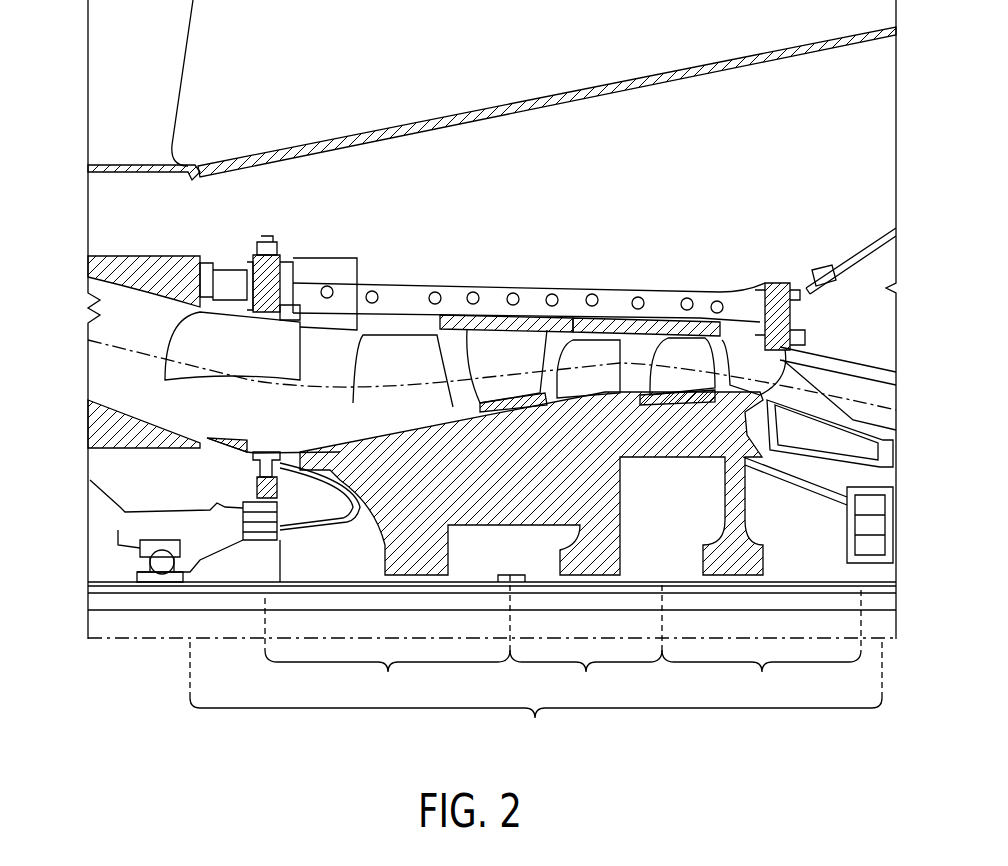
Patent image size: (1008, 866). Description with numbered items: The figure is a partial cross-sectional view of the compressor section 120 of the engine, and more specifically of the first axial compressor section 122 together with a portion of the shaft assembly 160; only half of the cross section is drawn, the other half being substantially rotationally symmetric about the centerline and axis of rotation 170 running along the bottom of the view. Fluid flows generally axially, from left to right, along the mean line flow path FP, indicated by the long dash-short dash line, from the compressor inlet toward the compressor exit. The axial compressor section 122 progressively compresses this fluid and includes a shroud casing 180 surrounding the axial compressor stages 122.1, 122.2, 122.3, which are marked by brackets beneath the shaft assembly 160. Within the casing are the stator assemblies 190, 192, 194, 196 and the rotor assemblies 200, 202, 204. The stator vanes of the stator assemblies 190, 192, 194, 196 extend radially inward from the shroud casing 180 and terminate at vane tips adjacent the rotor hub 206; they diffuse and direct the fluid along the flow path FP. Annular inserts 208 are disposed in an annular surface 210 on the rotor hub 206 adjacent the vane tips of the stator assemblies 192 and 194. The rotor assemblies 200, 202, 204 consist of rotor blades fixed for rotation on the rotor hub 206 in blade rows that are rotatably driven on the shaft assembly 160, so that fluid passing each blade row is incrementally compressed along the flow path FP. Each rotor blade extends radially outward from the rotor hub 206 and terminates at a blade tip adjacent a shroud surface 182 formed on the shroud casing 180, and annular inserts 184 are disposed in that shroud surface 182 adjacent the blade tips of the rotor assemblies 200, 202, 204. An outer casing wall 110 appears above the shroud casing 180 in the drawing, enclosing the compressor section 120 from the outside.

The outer casing 110 is at (560, 95).
The compressor section 120 is at (368, 96).
The axial compressor section 122 is at (536, 697).
The axial compressor stage 122.1 is at (387, 638).
The axial compressor stage 122.2 is at (586, 643).
The axial compressor stage 122.3 is at (761, 645).
The shaft assembly 160 is at (88, 593).
The centerline and axis of rotation 170 is at (100, 645).
The shroud casing 180 is at (165, 270).
The shroud surface 182 is at (318, 440).
The annular inserts 184 is at (440, 330).
The stator assembly 190 is at (268, 340).
The stator assembly 192 is at (505, 345).
The stator assembly 194 is at (660, 350).
The stator assembly 196 is at (832, 372).
The rotor assembly 200 is at (388, 350).
The rotor assembly 202 is at (600, 350).
The rotor assembly 204 is at (775, 300).
The rotor hub 206 is at (603, 537).
The annular inserts 208 is at (507, 410).
The annular surface 210 is at (455, 412).
The mean line flow path FP is at (97, 355).